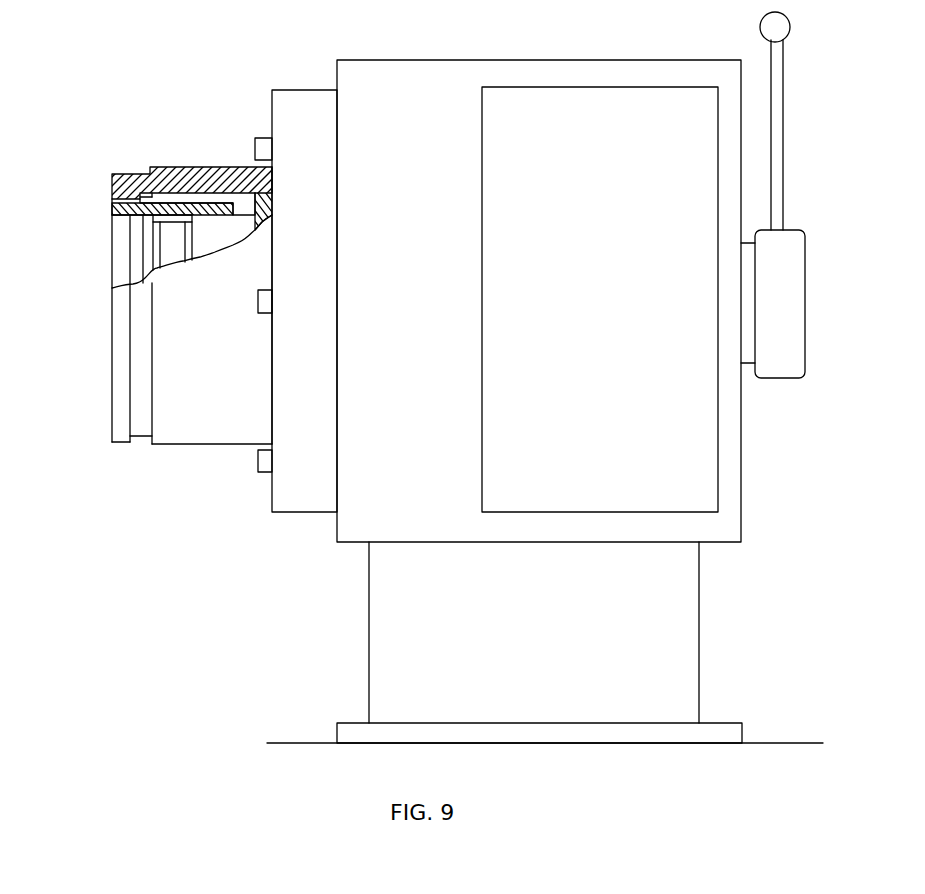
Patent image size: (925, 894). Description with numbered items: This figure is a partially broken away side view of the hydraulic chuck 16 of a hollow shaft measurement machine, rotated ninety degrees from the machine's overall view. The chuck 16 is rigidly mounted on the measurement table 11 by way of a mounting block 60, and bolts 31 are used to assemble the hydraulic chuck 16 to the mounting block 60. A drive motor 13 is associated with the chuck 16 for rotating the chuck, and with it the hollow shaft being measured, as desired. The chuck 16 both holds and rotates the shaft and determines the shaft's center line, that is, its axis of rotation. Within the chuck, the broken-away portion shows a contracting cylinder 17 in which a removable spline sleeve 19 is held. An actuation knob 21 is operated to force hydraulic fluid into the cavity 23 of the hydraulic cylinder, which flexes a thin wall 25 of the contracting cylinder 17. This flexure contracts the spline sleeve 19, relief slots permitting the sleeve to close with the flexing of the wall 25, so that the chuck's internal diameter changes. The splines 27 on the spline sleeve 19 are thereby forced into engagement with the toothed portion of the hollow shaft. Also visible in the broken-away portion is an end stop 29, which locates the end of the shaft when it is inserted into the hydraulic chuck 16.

The measurement table 11 is at (778, 742).
The drive motor 13 is at (598, 85).
The hydraulic chuck 16 is at (110, 372).
The contracting cylinder 17 is at (137, 178).
The spline sleeve 19 is at (120, 217).
The actuation knob 21 is at (783, 121).
The cavity 23 is at (160, 192).
The thin wall 25 is at (215, 207).
The splines 27 is at (170, 222).
The end stop 29 is at (268, 218).
The bolts 31 is at (262, 145).
The mounting block 60 is at (700, 612).